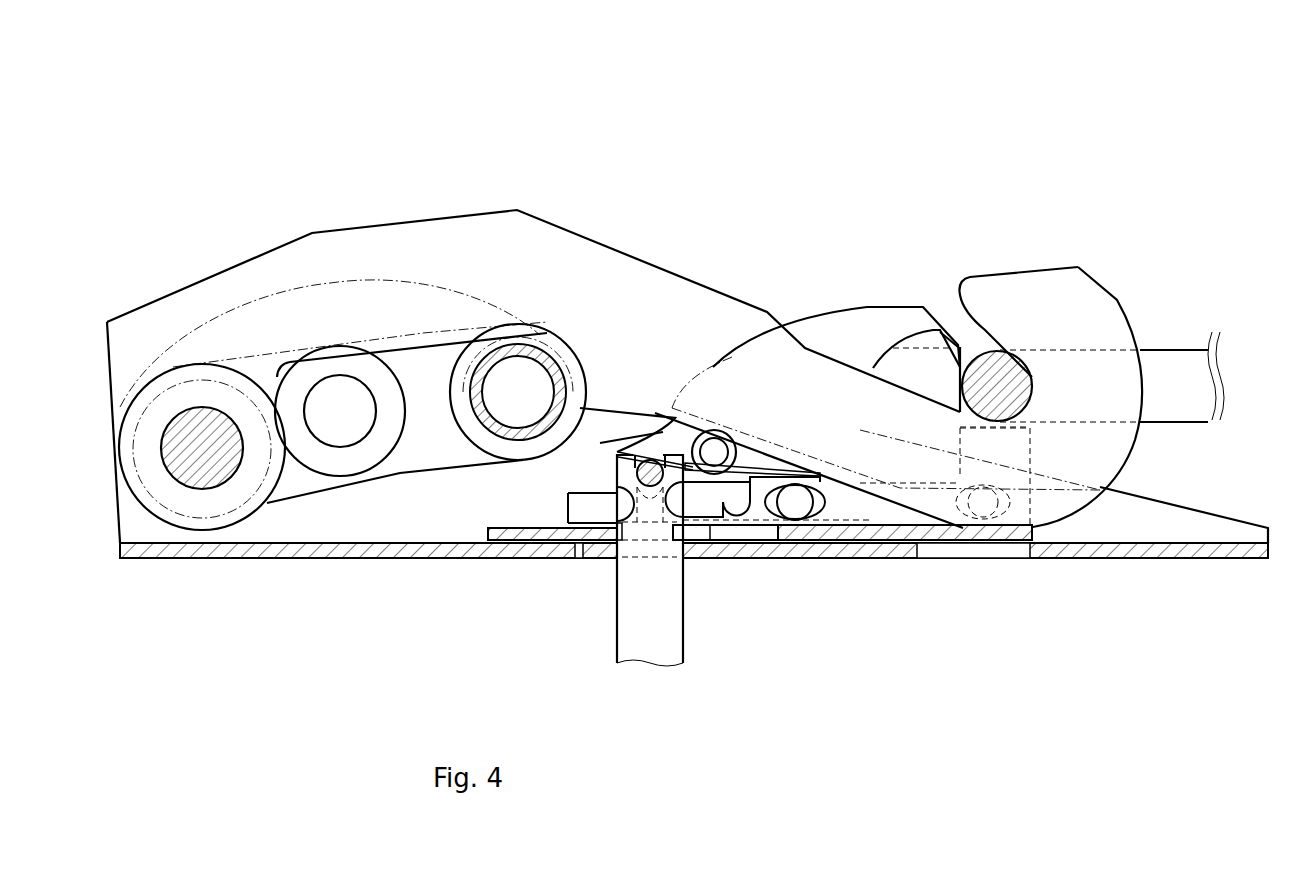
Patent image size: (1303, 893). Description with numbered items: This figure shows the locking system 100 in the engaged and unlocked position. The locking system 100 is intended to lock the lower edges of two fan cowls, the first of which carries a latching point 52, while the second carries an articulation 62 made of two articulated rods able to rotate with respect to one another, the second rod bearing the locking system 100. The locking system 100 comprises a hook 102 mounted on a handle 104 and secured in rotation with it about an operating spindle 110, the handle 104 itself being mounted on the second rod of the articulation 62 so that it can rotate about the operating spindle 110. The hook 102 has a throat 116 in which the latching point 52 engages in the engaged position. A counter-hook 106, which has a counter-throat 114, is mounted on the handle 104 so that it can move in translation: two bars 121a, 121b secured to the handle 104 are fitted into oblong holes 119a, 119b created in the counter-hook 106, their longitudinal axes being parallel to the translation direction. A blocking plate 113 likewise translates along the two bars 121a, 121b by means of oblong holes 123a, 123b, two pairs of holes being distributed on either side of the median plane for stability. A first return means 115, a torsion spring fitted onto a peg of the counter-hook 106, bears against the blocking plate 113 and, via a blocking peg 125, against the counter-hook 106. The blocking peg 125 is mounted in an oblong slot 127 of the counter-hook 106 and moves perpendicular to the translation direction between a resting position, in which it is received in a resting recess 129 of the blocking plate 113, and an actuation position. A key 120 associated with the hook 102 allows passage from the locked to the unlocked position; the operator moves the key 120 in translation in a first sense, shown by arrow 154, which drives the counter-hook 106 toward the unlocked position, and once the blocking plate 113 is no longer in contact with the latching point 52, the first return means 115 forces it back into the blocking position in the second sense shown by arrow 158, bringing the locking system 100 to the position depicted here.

The locking system 100 is at (1020, 102).
The hook 102 is at (495, 240).
The handle 104 is at (290, 552).
The counter-hook 106 is at (922, 322).
The operating spindle 110 is at (193, 452).
The articulation 62 is at (362, 452).
The blocking plate 113 is at (575, 512).
The counter-throat 114 is at (835, 462).
The first return means 115 is at (718, 472).
The throat 116 is at (1032, 378).
The latching point 52 is at (1197, 377).
The oblong hole 119a is at (757, 560).
The oblong hole 119b is at (907, 550).
The key 120 is at (665, 655).
The bar 121a is at (814, 535).
The bar 121b is at (1005, 525).
The oblong hole 123a is at (867, 543).
The oblong hole 123b is at (952, 550).
The blocking peg 125 is at (645, 485).
The oblong slot 127 is at (660, 485).
The resting recess 129 is at (728, 520).
The arrow 154 is at (683, 737).
The arrow 158 is at (925, 748).